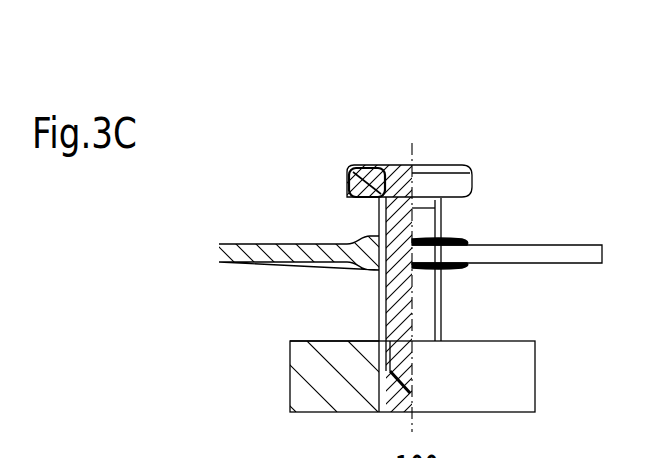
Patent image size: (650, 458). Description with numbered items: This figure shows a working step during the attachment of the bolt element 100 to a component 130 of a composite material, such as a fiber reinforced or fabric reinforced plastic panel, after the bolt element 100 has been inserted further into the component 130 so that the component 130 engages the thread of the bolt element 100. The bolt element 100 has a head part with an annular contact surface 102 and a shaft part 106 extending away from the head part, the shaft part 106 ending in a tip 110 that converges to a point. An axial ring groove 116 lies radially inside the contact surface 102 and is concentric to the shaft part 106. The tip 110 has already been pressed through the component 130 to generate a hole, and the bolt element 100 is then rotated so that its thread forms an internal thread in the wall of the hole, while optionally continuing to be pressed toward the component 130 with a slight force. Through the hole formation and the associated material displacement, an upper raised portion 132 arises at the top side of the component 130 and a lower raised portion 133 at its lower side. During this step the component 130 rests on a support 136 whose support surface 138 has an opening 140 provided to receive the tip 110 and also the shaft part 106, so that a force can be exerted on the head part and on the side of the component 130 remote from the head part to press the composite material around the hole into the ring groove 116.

The bolt element 100 is at (387, 154).
The annular contact surface 102 is at (355, 208).
The shaft part 106 is at (372, 302).
The tip 110 is at (405, 368).
The axial ring groove 116 is at (359, 181).
The component 130 is at (554, 251).
The upper raised portion 132 is at (463, 238).
The lower raised portion 133 is at (465, 267).
The support 136 is at (307, 365).
The support surface 138 is at (323, 338).
The opening 140 is at (391, 403).